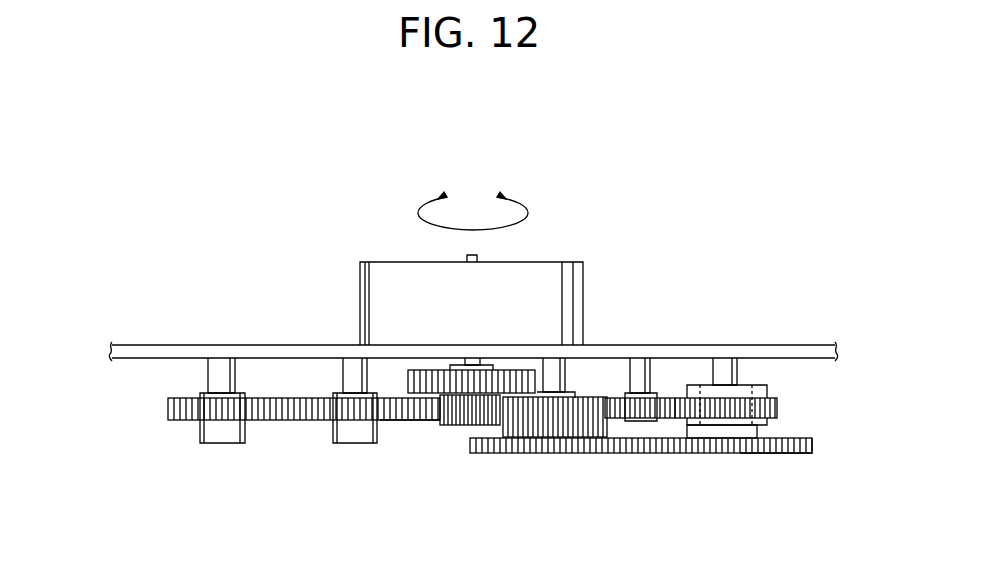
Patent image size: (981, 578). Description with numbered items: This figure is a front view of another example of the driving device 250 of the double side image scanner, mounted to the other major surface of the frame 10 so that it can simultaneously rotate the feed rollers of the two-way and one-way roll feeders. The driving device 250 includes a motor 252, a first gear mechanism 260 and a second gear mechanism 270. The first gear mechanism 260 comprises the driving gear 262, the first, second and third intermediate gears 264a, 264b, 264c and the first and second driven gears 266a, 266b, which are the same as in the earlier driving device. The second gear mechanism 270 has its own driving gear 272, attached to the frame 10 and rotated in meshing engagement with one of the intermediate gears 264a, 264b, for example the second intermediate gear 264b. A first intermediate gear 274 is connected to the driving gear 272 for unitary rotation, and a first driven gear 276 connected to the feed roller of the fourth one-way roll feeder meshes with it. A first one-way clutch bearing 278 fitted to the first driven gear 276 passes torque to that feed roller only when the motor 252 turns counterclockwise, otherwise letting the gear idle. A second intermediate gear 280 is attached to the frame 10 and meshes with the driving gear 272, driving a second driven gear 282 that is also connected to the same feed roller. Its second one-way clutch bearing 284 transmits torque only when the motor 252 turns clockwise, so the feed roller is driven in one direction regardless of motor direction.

The frame 10 is at (153, 350).
The driving device 250 is at (157, 428).
The motor 252 is at (405, 280).
The first gear mechanism 260 is at (323, 447).
The driving gear 262 is at (462, 425).
The first intermediate gear 264a is at (505, 377).
The second intermediate gear 264b is at (442, 420).
The third intermediate gear 264c is at (305, 403).
The first driven gear 266a is at (286, 403).
The second driven gear 266b is at (286, 403).
The second gear mechanism 270 is at (693, 401).
The driving gear 272 is at (527, 427).
The first intermediate gear 274 is at (575, 448).
The first driven gear 276 is at (795, 450).
The first one-way clutch bearing 278 is at (757, 435).
The second intermediate gear 280 is at (667, 403).
The second driven gear 282 is at (770, 407).
The second one-way clutch bearing 284 is at (743, 385).